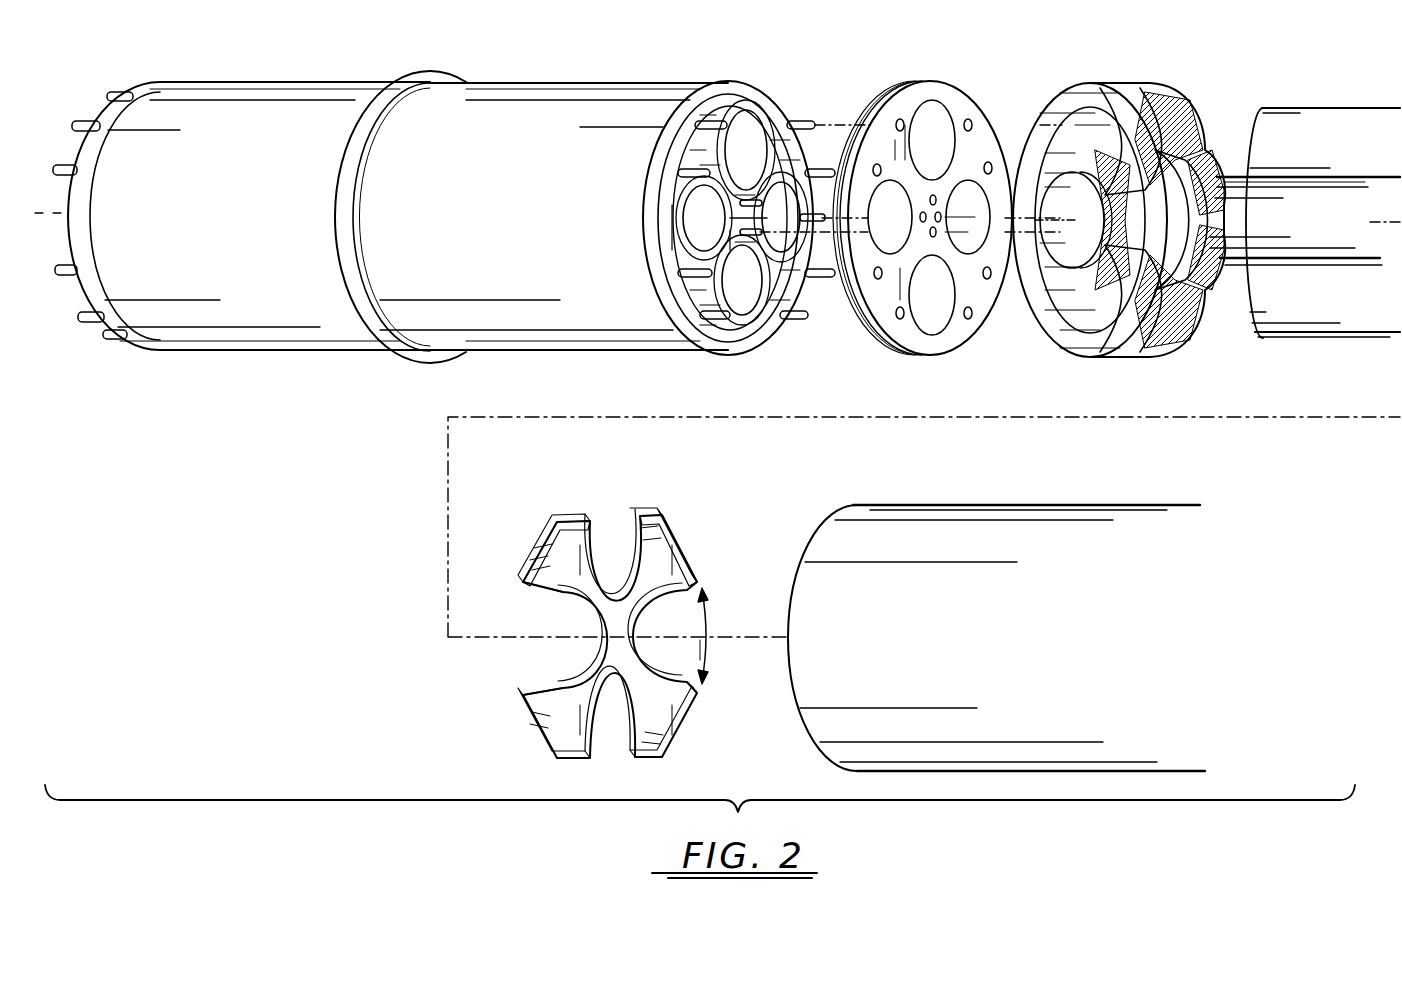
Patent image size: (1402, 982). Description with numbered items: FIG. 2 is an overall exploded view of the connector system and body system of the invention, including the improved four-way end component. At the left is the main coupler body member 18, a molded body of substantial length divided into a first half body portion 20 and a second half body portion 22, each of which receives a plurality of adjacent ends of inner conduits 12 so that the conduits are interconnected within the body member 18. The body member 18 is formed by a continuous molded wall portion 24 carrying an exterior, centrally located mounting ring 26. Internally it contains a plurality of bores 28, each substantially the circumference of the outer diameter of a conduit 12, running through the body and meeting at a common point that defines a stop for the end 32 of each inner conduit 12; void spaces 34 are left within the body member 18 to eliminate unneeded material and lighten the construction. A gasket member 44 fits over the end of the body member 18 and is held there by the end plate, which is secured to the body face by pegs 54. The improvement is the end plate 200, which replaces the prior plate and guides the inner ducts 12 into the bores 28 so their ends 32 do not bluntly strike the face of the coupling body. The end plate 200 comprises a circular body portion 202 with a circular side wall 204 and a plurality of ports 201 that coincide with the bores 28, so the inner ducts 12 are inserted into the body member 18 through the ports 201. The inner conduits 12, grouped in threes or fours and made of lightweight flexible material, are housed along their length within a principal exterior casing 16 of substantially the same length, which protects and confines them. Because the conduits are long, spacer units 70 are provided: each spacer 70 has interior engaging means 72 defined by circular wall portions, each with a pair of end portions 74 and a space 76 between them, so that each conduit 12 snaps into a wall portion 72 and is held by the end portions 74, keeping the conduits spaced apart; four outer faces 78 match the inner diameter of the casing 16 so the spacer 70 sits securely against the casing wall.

The inner conduits 12 is at (1312, 136).
The principal exterior casing 16 is at (860, 533).
The main coupler body member 18 is at (501, 72).
The first half body portion 20 is at (578, 90).
The second half body portion 22 is at (212, 120).
The continuous molded wall portion 24 is at (695, 90).
The mounting ring 26 is at (370, 314).
The bores 28 is at (746, 146).
The end of inner conduit 32 is at (1253, 327).
The void spaces 34 is at (788, 278).
The gasket member 44 is at (950, 101).
The pegs 54 is at (72, 275).
The spacer unit 70 is at (558, 736).
The interior engaging means 72 is at (627, 548).
The end portions 74 is at (553, 588).
The space 76 is at (704, 633).
The outer faces 78 is at (547, 550).
The end plate 200 is at (1092, 79).
The ports 201 is at (1160, 94).
The circular body portion 202 is at (1038, 306).
The circular side wall 204 is at (1036, 133).